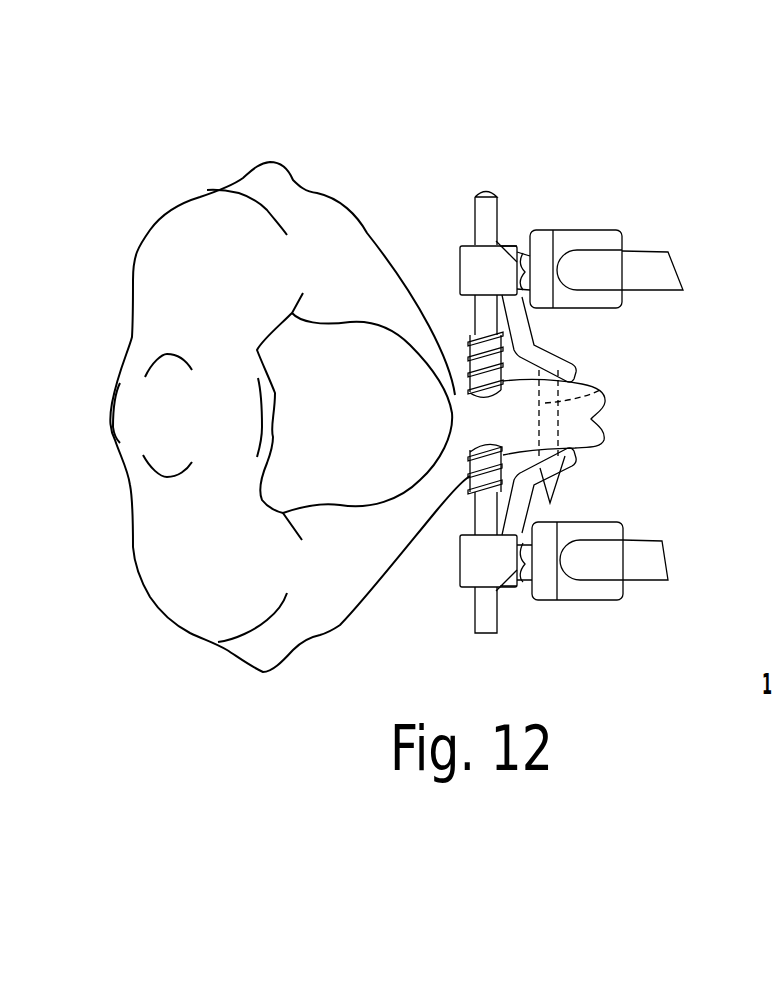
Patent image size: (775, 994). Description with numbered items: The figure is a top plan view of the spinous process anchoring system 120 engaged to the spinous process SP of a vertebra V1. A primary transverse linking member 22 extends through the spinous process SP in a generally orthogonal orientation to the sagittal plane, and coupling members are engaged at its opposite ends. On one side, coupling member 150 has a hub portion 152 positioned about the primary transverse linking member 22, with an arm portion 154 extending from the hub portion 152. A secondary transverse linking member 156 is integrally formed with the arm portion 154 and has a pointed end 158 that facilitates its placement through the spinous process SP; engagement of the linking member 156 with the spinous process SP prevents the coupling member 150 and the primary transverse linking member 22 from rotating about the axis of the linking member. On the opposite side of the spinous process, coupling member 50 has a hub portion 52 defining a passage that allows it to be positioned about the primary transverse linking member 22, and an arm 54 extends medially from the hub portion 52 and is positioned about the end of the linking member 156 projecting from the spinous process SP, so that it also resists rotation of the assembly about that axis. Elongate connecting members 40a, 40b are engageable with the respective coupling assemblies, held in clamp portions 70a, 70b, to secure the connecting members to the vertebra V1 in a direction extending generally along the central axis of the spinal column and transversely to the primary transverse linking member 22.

The spinous process anchoring system 120 is at (570, 113).
The primary transverse linking member 22 is at (489, 187).
The coupling member 50 is at (457, 589).
The hub portion 152 is at (460, 258).
The hub portion 52 is at (462, 572).
The coupling member 150 is at (512, 238).
The arm portion 154 is at (562, 368).
The pointed end 158 is at (560, 500).
The secondary transverse linking member 156 is at (600, 390).
The arm 54 is at (578, 461).
The rod clamp 70a is at (593, 600).
The rod clamp 70b is at (590, 228).
The elongate connecting member 40a is at (641, 545).
The elongate connecting member 40b is at (659, 248).
The spinous process SP is at (607, 433).
The vertebra V1 is at (152, 265).